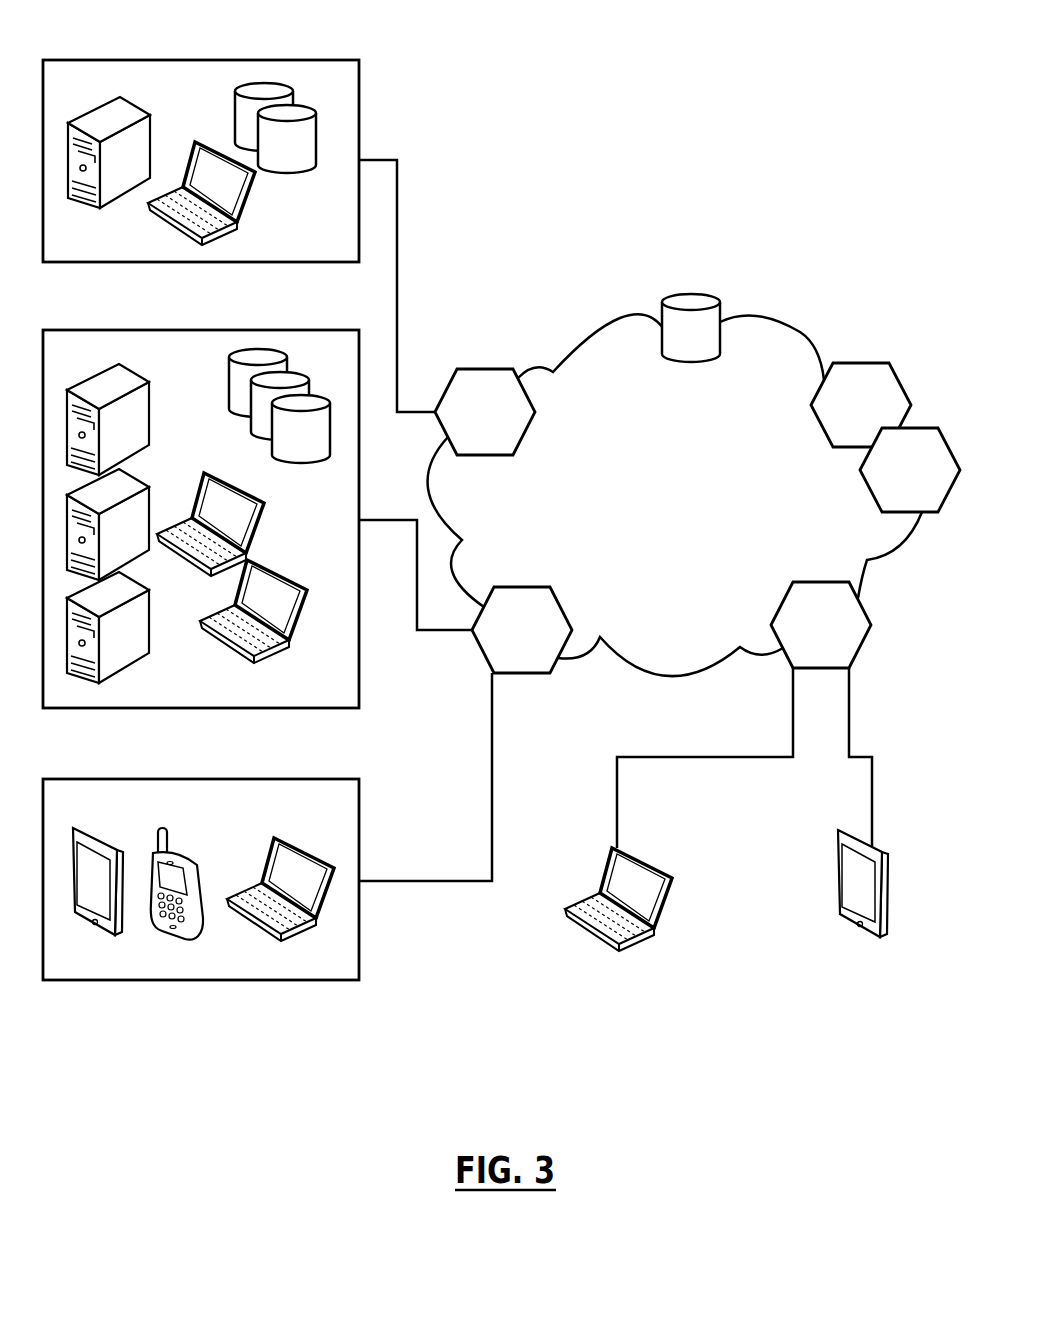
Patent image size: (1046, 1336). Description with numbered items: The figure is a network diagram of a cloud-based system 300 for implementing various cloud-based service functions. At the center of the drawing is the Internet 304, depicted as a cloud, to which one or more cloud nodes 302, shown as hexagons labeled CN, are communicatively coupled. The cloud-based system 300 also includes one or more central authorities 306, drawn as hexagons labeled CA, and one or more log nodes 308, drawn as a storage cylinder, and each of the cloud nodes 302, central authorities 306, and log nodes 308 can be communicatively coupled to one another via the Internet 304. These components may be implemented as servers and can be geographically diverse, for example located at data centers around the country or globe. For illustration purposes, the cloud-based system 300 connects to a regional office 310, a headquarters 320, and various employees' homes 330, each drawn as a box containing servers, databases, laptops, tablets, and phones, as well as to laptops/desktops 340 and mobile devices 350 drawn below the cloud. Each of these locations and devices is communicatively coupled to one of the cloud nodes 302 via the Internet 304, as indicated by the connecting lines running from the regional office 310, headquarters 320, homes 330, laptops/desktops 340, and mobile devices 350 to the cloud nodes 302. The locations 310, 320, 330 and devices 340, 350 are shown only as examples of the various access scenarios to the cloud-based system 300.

The cloud-based system 300 is at (705, 101).
The cloud node 302 is at (478, 369).
The Internet 304 is at (800, 330).
The central authority 306 is at (867, 363).
The log node 308 is at (695, 297).
The regional office 310 is at (272, 60).
The headquarters 320 is at (270, 329).
The employee's home 330 is at (283, 779).
The laptop/desktop 340 is at (665, 878).
The mobile device 350 is at (838, 900).